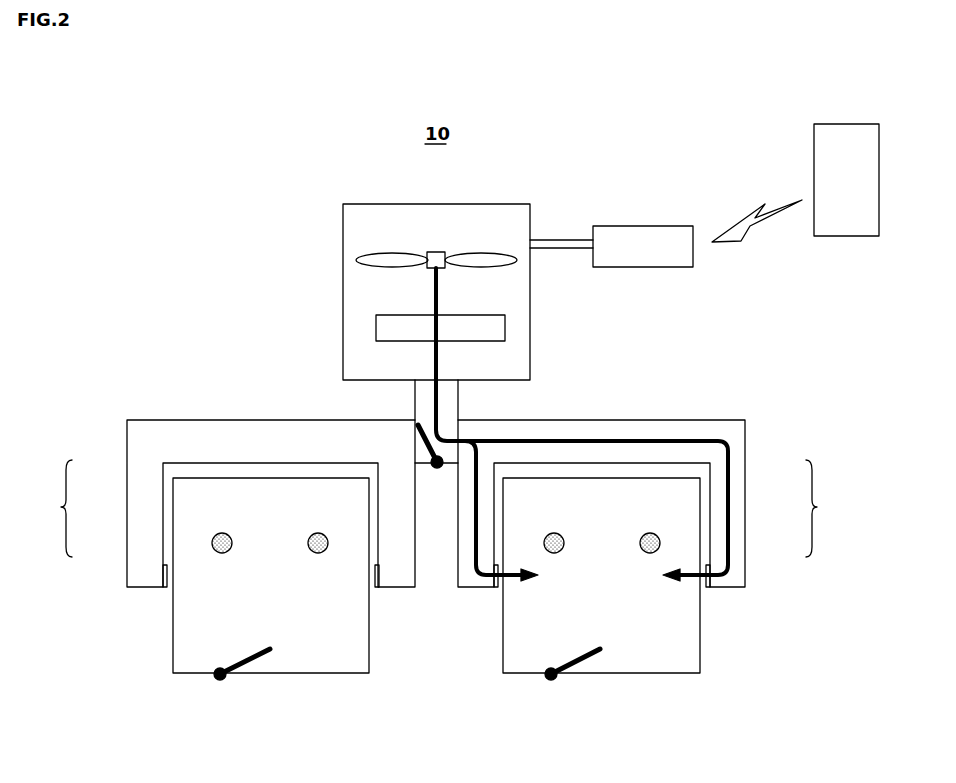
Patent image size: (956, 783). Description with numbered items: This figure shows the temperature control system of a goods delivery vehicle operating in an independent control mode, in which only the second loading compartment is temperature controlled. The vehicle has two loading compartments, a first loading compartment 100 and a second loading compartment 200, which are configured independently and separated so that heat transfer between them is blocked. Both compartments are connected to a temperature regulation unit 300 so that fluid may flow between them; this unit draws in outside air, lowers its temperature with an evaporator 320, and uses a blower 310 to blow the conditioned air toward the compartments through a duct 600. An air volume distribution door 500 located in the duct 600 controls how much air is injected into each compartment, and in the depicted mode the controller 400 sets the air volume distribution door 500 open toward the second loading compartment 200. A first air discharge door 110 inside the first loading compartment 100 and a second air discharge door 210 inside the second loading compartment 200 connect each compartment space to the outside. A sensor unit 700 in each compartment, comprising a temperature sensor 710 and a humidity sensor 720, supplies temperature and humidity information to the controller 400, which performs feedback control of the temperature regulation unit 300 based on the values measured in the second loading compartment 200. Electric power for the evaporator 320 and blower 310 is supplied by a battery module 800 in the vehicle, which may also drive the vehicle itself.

The first loading compartment 100 is at (334, 668).
The first air discharge door 110 is at (256, 662).
The second loading compartment 200 is at (658, 668).
The second air discharge door 210 is at (588, 662).
The temperature regulation unit 300 is at (362, 204).
The blower 310 is at (490, 253).
The evaporator 320 is at (376, 322).
The controller 400 is at (647, 226).
The air volume distribution door 500 is at (418, 442).
The duct 600 is at (458, 402).
The sensor unit 700 is at (441, 503).
The temperature sensor 710 is at (212, 543).
The humidity sensor 720 is at (318, 533).
The battery module 800 is at (846, 124).